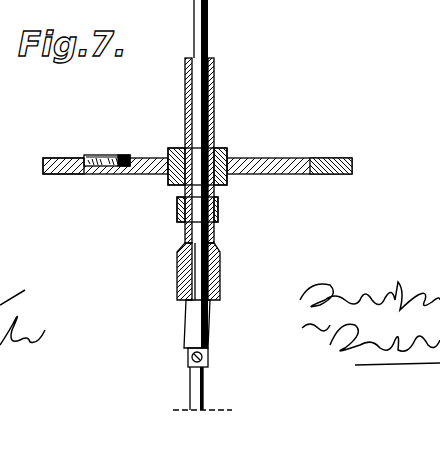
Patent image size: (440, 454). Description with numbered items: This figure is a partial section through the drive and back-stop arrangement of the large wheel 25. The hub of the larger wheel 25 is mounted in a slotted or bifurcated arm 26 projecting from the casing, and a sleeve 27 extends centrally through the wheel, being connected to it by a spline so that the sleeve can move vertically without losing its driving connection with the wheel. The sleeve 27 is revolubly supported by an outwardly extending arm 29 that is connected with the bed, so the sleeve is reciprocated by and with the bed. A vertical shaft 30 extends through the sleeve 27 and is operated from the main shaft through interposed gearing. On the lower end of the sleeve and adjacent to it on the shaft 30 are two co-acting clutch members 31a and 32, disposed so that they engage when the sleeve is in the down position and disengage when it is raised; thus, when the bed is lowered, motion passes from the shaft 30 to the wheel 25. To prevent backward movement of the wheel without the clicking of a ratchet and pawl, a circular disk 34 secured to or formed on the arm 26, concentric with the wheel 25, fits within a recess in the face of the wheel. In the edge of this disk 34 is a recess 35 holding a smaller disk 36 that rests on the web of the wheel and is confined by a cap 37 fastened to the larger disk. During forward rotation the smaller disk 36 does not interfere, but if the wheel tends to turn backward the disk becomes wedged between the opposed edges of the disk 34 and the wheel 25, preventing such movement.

The larger wheel 25 is at (342, 158).
The slotted or bifurcated arm 26 is at (170, 186).
The sleeve 27 is at (214, 107).
The outwardly extending arm 29 is at (219, 213).
The vertical shaft 30 is at (208, 17).
The clutch member 31a is at (221, 252).
The clutch member 32 is at (211, 341).
The circular disk 34 is at (288, 158).
The recess 35 is at (64, 157).
The smaller disk 36 is at (102, 155).
The cap 37 is at (128, 157).